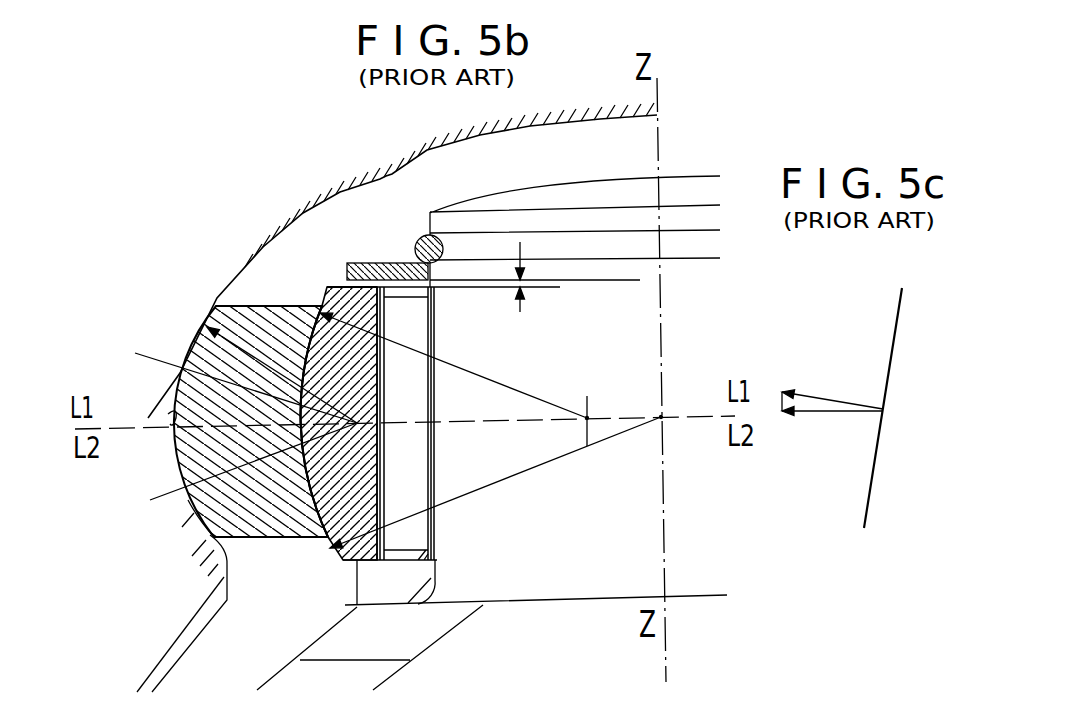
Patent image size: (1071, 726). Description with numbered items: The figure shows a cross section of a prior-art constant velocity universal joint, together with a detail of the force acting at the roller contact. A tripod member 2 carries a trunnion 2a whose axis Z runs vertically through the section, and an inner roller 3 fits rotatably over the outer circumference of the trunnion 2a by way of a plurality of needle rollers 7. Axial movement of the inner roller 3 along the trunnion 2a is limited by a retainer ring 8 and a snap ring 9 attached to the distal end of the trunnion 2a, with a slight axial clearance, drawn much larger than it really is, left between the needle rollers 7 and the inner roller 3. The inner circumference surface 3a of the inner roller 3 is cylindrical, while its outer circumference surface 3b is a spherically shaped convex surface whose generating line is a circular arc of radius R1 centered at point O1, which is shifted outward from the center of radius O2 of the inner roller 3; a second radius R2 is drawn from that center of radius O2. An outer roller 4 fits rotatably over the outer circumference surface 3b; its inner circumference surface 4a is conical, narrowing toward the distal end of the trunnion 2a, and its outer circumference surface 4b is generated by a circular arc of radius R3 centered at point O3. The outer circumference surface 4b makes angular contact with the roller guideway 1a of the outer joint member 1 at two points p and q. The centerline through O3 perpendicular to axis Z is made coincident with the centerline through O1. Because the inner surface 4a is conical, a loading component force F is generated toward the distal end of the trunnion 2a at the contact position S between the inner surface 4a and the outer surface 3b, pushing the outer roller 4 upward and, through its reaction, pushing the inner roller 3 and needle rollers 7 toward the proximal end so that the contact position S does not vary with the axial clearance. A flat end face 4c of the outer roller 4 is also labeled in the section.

In FIG. 5b, the outer joint member 1 is at (172, 648).
In FIG. 5b, the roller guideway 1a is at (168, 414).
In FIG. 5b, the tripod member 2 is at (328, 651).
In FIG. 5b, the trunnion 2a is at (577, 280).
In FIG. 5b, the inner roller 3 is at (342, 562).
In FIG. 5b, the inner circumference surface 3a is at (384, 311).
In FIG. 5b, the outer circumference surface 3b is at (318, 296).
In FIG. 5b, the outer roller 4 is at (212, 545).
In FIG. 5b, the inner circumference surface 4a is at (326, 556).
In FIG. 5c, the inner circumference surface 4a is at (872, 494).
In FIG. 5b, the outer circumference surface 4b is at (185, 512).
In FIG. 5b, the lens flat rim 4c is at (262, 294).
In FIG. 5b, the needle rollers 7 is at (418, 533).
In FIG. 5b, the retainer ring 8 is at (376, 263).
In FIG. 5b, the snap ring 9 is at (427, 235).
In FIG. 5b, the center of outer circumference surface of inner roller O1 is at (589, 417).
In FIG. 5b, the center of radius of inner roller O2 is at (663, 416).
In FIG. 5b, the center of outer circumference surface of outer roller O3 is at (357, 423).
In FIG. 5b, the radius of outer circumference surface of inner roller R1 is at (453, 379).
In FIG. 5b, the radius R2 is at (495, 482).
In FIG. 5b, the radius of outer circumference surface of outer roller R3 is at (282, 368).
In FIG. 5b, the contact point p is at (179, 370).
In FIG. 5b, the contact point q is at (180, 478).
In FIG. 5c, the loading component force F is at (778, 398).
In FIG. 5c, the contact position S is at (884, 409).